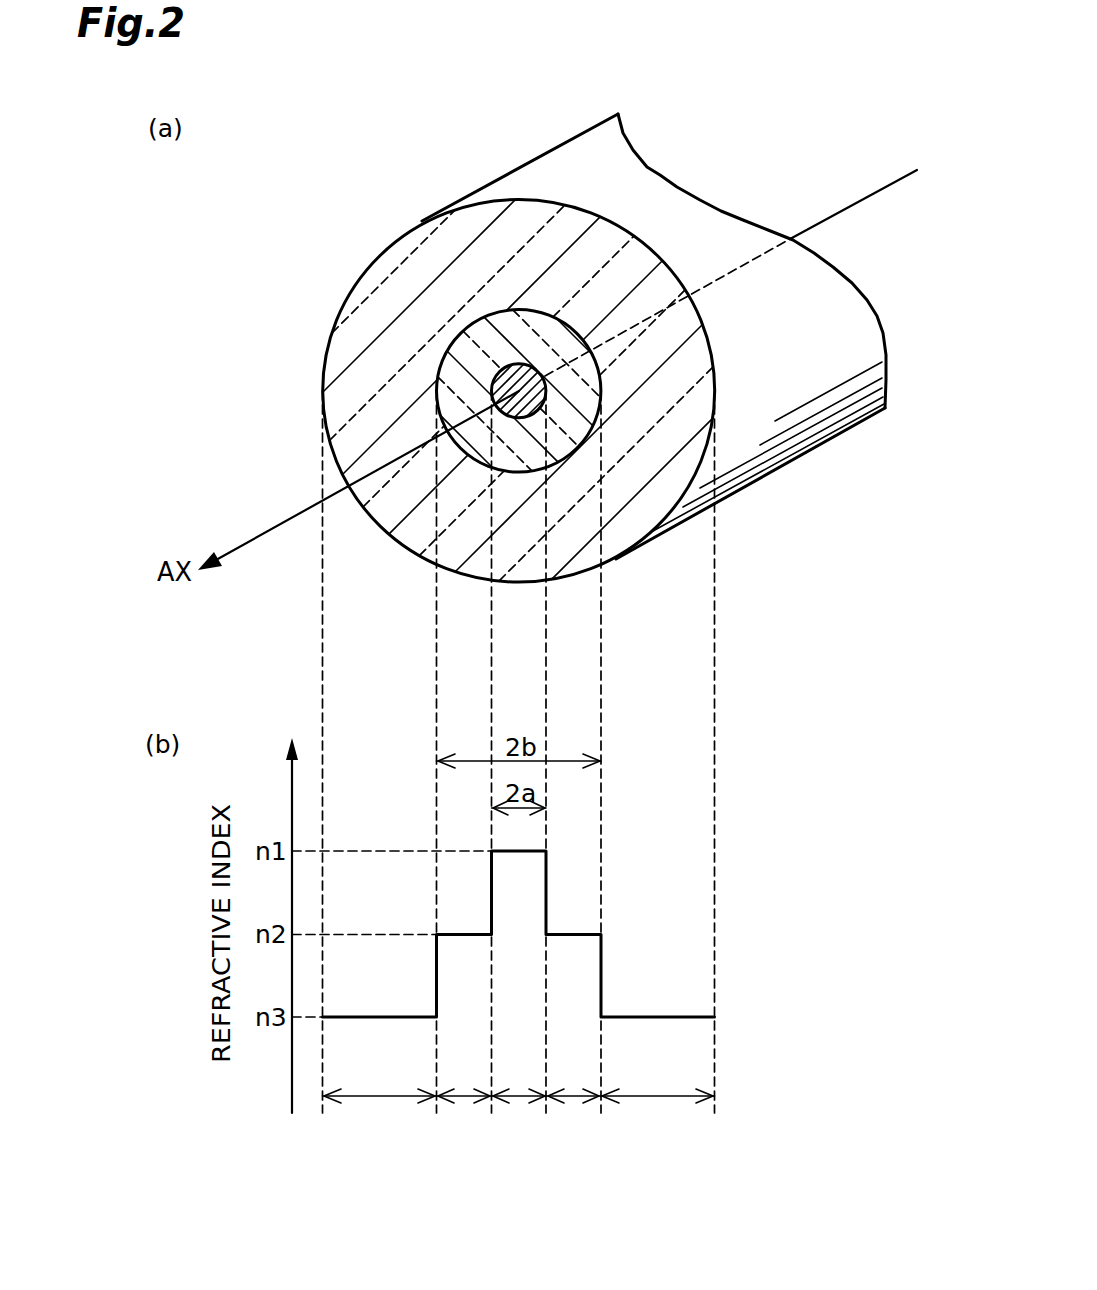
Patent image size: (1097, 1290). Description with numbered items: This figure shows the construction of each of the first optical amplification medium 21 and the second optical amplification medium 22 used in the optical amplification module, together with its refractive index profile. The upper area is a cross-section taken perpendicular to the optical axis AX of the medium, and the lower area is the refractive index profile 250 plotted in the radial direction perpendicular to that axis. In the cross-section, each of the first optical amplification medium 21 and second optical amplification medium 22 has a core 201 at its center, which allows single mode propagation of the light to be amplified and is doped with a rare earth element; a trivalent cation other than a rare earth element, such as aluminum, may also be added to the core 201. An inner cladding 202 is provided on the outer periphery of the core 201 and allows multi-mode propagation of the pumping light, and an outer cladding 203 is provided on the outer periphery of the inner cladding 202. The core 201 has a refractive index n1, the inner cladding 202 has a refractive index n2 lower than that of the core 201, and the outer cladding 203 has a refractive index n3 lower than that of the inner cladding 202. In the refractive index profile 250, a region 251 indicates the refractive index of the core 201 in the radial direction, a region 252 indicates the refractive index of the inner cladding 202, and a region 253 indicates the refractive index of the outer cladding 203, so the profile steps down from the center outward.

The first optical amplification medium 21 is at (666, 168).
The second optical amplification medium 22 is at (781, 140).
The core 201 is at (615, 322).
The inner cladding 202 is at (604, 377).
The outer cladding 203 is at (567, 390).
The refractive index profile 250 is at (681, 1016).
The region 251 is at (520, 1098).
The region 252 is at (464, 1098).
The region 253 is at (378, 1098).